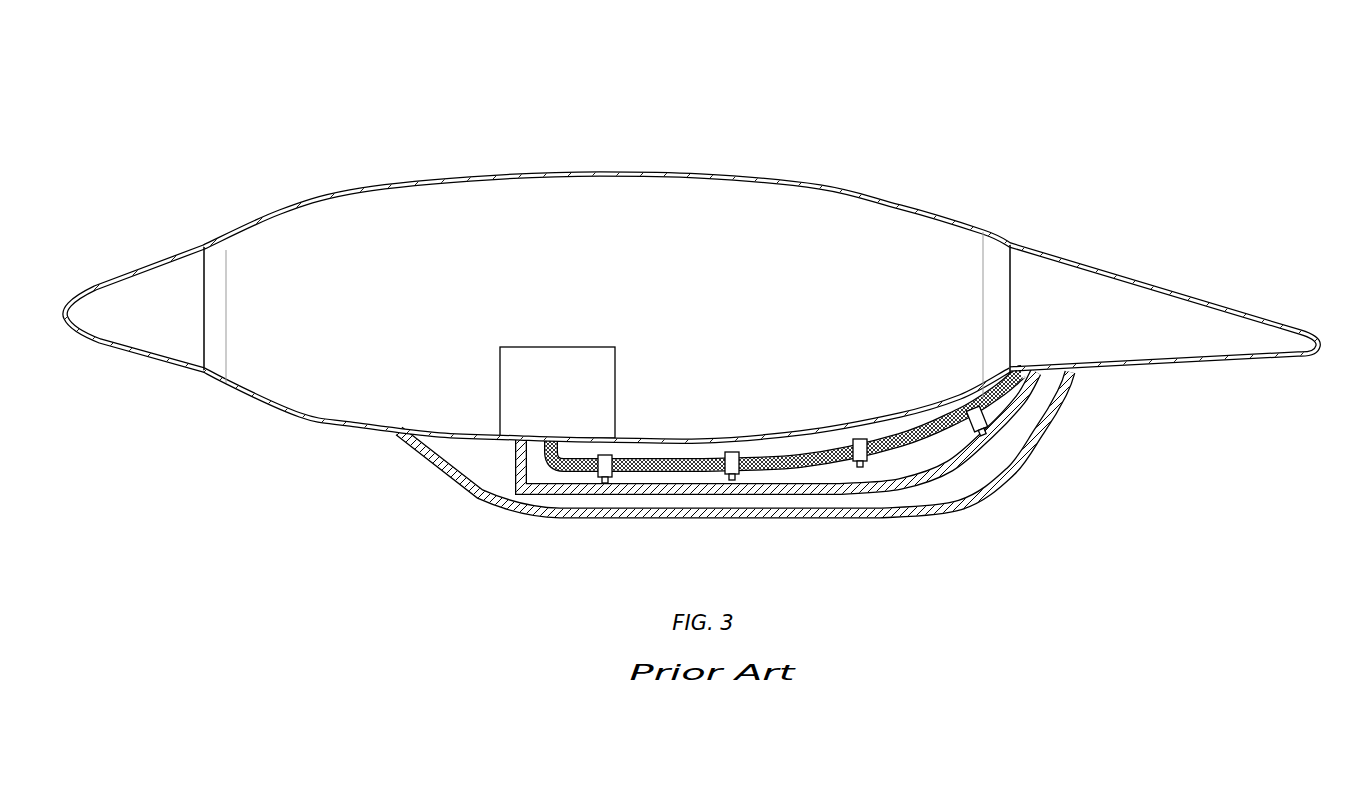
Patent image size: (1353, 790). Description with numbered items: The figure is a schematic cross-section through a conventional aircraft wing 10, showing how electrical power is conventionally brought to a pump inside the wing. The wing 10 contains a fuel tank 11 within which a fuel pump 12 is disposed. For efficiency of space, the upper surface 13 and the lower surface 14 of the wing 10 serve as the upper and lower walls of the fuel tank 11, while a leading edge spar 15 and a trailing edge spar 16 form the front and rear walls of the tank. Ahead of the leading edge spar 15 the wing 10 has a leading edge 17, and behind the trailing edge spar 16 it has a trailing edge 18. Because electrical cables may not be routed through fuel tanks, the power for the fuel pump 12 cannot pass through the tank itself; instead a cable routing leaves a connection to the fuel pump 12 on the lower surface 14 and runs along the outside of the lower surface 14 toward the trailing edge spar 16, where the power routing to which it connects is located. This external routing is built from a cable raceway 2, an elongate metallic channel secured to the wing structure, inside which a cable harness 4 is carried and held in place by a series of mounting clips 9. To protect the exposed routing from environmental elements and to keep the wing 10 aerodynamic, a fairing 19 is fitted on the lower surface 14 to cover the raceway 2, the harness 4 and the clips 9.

The cable raceway 2 is at (912, 472).
The cable harness 4 is at (800, 472).
The mounting clip 9 is at (605, 455).
The wing 10 is at (940, 122).
The fuel tank 11 is at (700, 300).
The fuel pump 12 is at (615, 360).
The upper surface 13 is at (810, 182).
The lower surface 14 is at (300, 418).
The leading edge spar 15 is at (218, 260).
The trailing edge spar 16 is at (995, 258).
The leading edge 17 is at (98, 286).
The trailing edge 18 is at (1300, 326).
The fairing 19 is at (1007, 479).